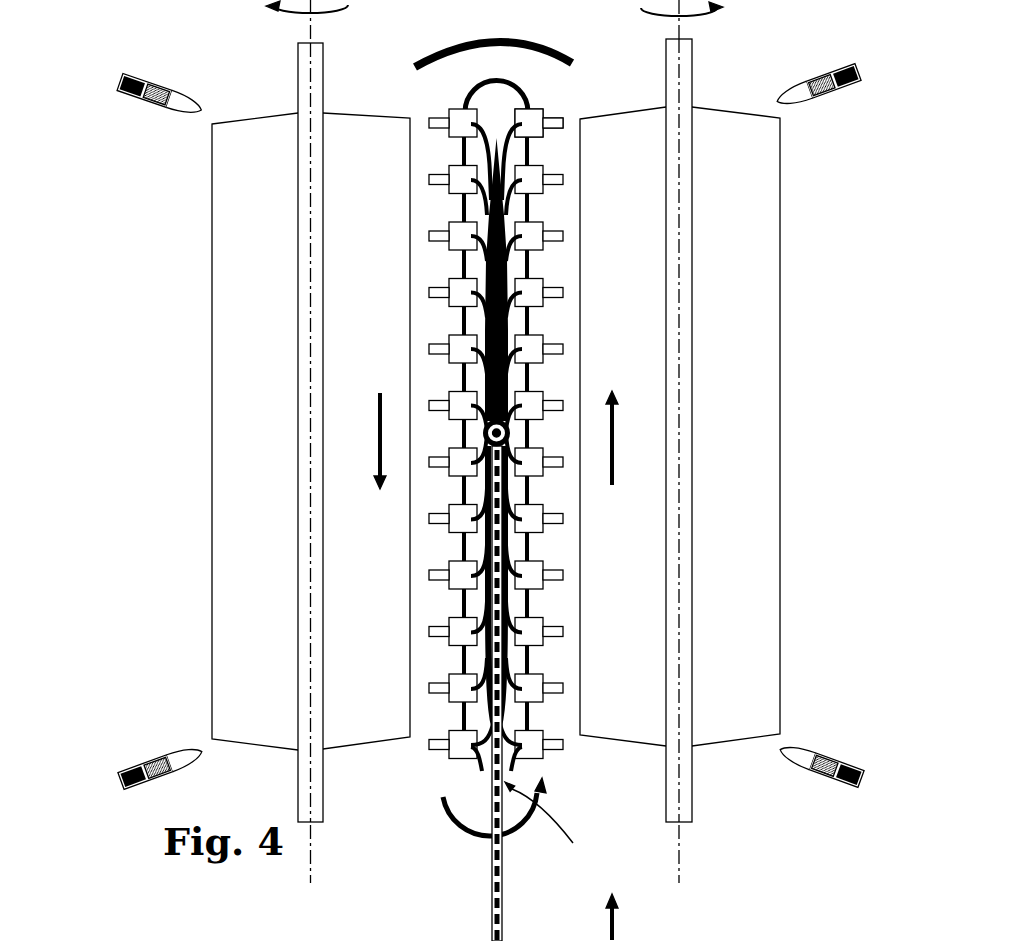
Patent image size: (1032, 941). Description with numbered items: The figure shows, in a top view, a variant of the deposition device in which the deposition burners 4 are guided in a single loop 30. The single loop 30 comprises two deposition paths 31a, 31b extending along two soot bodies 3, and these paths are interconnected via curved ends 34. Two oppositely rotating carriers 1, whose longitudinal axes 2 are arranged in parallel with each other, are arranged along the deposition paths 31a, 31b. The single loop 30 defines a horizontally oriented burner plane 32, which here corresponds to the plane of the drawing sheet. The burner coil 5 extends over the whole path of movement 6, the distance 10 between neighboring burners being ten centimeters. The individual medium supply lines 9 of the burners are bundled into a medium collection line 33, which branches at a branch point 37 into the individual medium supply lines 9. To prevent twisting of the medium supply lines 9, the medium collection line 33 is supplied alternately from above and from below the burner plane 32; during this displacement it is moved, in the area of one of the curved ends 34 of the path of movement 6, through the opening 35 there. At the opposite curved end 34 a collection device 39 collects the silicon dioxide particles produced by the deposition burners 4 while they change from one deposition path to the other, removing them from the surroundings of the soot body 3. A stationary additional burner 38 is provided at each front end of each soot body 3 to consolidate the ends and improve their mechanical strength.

The carrier 1 is at (311, 98).
The longitudinal axis 2 is at (308, 27).
The soot body 3 is at (256, 171).
The deposition burner 4 is at (528, 122).
The burner coil 5 is at (435, 766).
The path of movement 6 is at (605, 437).
The medium supply line 9 is at (503, 134).
The direction of movement 10 is at (613, 447).
The single loop 30 is at (308, 434).
The deposition path 31a is at (485, 606).
The deposition path 31b is at (508, 612).
The burner plane 32 is at (660, 932).
The medium collection line 33 is at (495, 873).
The curved end 34 is at (500, 80).
The opening 35 is at (555, 824).
The branch point 37 is at (484, 431).
The additional burner 38 is at (153, 82).
The collection device 39 is at (432, 52).